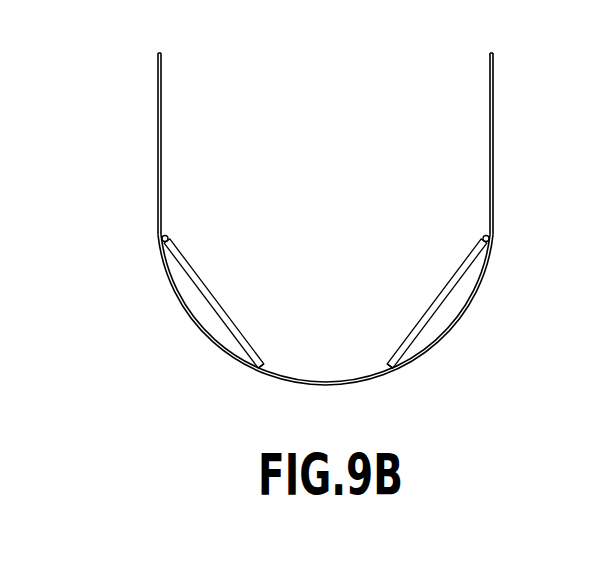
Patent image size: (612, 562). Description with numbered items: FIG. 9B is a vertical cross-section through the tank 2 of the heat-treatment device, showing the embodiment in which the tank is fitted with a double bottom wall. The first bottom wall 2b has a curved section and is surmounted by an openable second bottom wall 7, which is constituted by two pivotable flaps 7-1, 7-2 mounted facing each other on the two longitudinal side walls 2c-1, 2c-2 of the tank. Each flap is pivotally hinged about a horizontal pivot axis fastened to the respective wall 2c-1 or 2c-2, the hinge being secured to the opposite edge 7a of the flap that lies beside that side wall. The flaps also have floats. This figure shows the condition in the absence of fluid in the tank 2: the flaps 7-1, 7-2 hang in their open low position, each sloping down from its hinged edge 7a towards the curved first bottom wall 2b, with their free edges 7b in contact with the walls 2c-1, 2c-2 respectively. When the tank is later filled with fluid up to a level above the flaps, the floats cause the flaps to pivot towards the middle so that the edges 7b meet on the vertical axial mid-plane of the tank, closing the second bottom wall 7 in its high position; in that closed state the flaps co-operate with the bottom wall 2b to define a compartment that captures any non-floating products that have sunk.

The tank 2 is at (277, 224).
The longitudinal side wall 2c-1 is at (161, 107).
The longitudinal side wall 2c-2 is at (490, 107).
The first bottom wall 2b is at (403, 367).
The second bottom wall 7 is at (325, 284).
The pivotable flap 7-1 is at (222, 307).
The pivotable flap 7-2 is at (428, 307).
The opposite edge 7a is at (168, 237).
The edge 7b is at (266, 367).